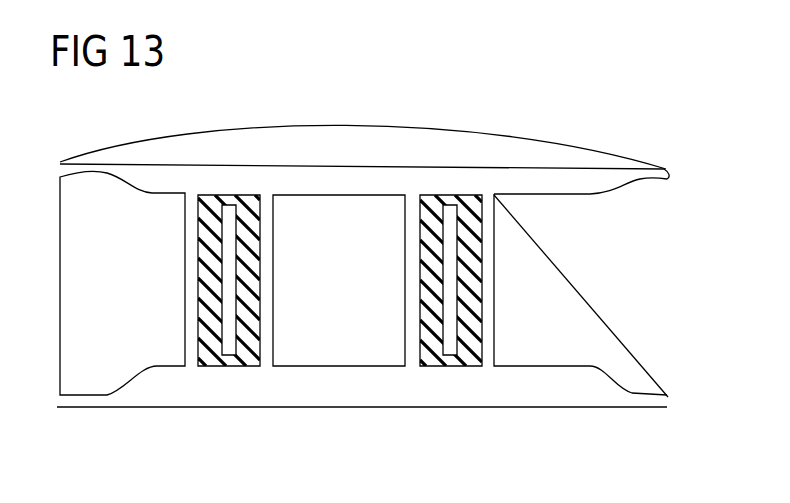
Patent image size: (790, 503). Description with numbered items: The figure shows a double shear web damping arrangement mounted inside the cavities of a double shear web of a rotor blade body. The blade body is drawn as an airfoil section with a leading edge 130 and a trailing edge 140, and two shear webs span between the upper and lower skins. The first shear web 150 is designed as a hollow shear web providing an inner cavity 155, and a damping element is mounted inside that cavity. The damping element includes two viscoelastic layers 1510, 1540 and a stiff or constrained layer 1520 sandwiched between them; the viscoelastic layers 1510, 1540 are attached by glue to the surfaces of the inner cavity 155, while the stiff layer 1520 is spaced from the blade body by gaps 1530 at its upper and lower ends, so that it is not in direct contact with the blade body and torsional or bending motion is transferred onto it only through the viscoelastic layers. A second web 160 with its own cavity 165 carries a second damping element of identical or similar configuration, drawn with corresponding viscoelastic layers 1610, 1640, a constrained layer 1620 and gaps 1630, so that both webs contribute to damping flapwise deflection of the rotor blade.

The leading edge 130 is at (654, 166).
The trailing edge 140 is at (647, 400).
The shear web 150 is at (184, 316).
The inner cavity 155 is at (224, 148).
The second web 160 is at (486, 268).
The cavity 165 is at (466, 148).
The viscoelastic layer 1510 is at (197, 248).
The stiff layer 1520 is at (237, 338).
The gaps 1530 is at (229, 197).
The viscoelastic layer 1540 is at (250, 299).
The first flange of second spar 1610 is at (478, 226).
The web channel of second spar 1620 is at (451, 313).
The openings of second spar 1630 is at (450, 197).
The second flange of second spar 1640 is at (417, 249).